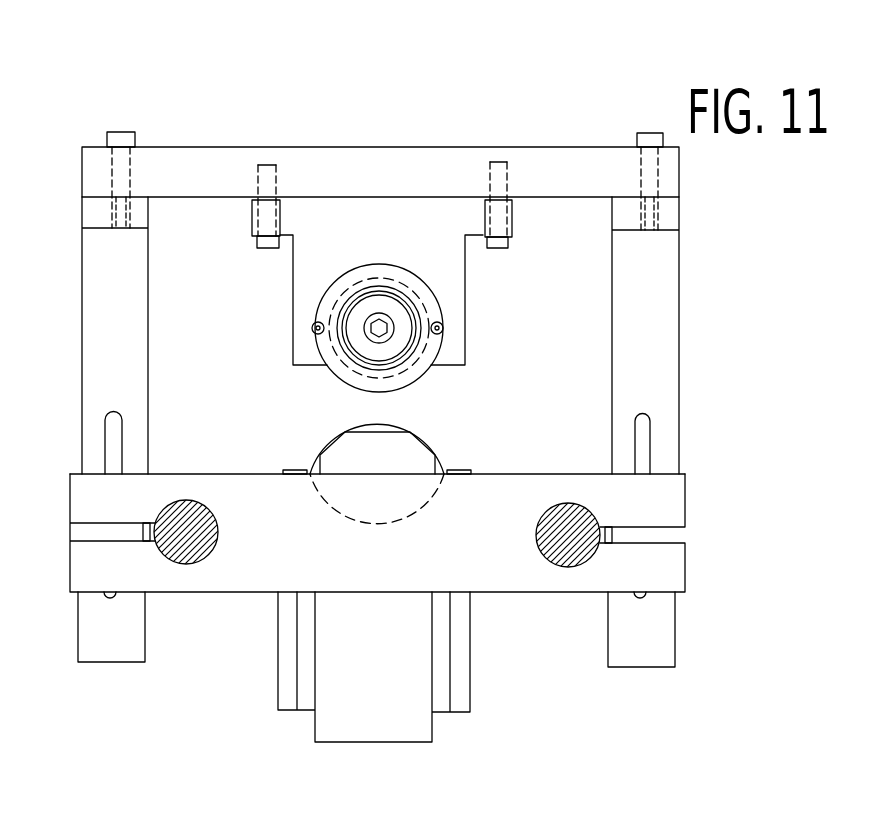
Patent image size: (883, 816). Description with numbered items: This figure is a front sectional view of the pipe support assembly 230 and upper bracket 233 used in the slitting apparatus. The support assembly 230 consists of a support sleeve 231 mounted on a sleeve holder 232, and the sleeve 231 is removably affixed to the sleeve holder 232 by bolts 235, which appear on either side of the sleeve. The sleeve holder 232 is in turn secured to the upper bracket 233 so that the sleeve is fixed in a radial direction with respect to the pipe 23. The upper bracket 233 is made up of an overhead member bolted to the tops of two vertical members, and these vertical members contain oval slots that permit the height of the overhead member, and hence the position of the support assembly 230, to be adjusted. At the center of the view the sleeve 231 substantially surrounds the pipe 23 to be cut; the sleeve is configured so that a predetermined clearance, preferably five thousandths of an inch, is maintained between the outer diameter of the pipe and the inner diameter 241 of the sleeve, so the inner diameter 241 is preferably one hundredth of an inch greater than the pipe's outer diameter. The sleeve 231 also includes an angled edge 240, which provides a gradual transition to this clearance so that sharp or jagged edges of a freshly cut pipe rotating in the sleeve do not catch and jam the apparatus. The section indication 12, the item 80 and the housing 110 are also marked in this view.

The section line 12- 12 is at (384, 172).
The pipe 23 is at (390, 358).
The spindle 80 is at (397, 343).
The housing 110 is at (392, 424).
The pipe support assembly 230 is at (224, 248).
The support sleeve 231 is at (407, 281).
The sleeve holder 232 is at (310, 272).
The upper bracket 233 is at (578, 165).
The bolts 235 is at (318, 322).
The angled edge 240 is at (406, 363).
The inner diameter 241 is at (335, 346).